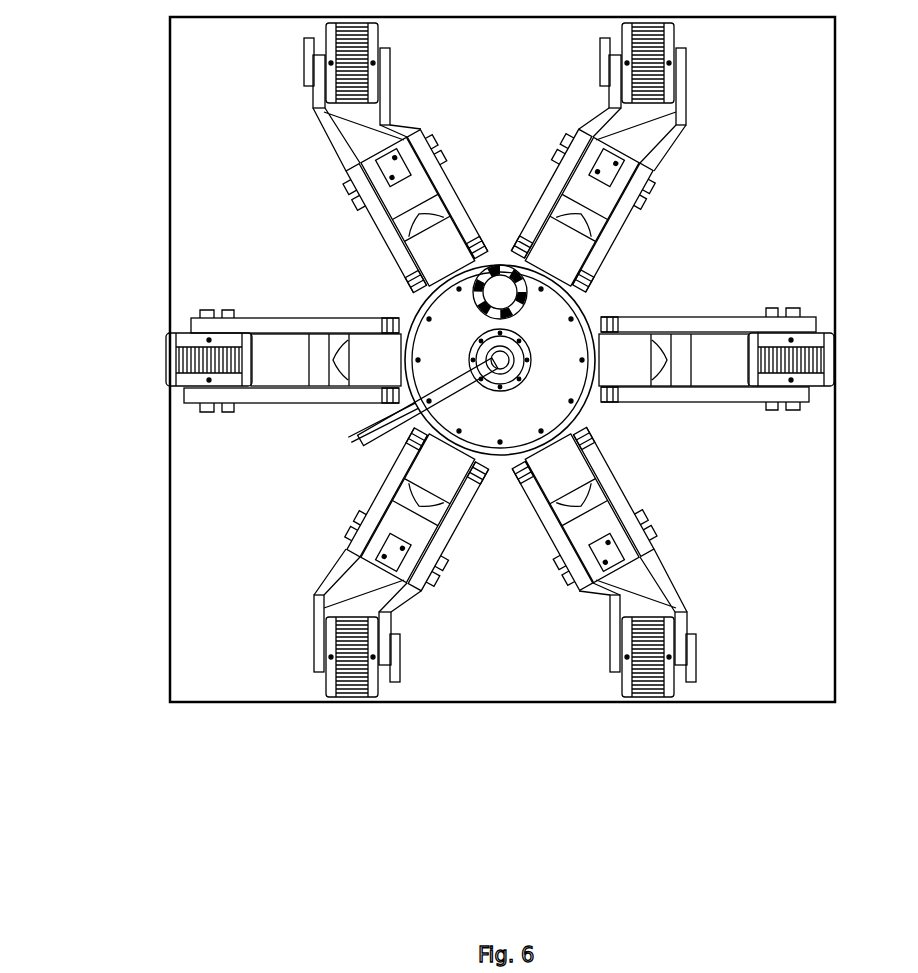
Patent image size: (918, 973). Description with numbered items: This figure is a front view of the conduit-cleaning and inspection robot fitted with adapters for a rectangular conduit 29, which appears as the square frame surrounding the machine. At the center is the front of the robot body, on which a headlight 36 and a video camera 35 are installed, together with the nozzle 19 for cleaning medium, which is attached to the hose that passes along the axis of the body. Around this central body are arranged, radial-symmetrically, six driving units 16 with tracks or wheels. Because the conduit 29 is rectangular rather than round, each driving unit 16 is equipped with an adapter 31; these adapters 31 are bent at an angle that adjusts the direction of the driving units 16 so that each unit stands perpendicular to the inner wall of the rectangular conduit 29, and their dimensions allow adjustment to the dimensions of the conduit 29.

The driving unit 16 is at (170, 337).
The nozzle for cleaning medium 19 is at (357, 445).
The rectangular conduit 29 is at (166, 475).
The adapter 31 is at (343, 657).
The video camera 35 is at (468, 282).
The headlight 36 is at (447, 340).